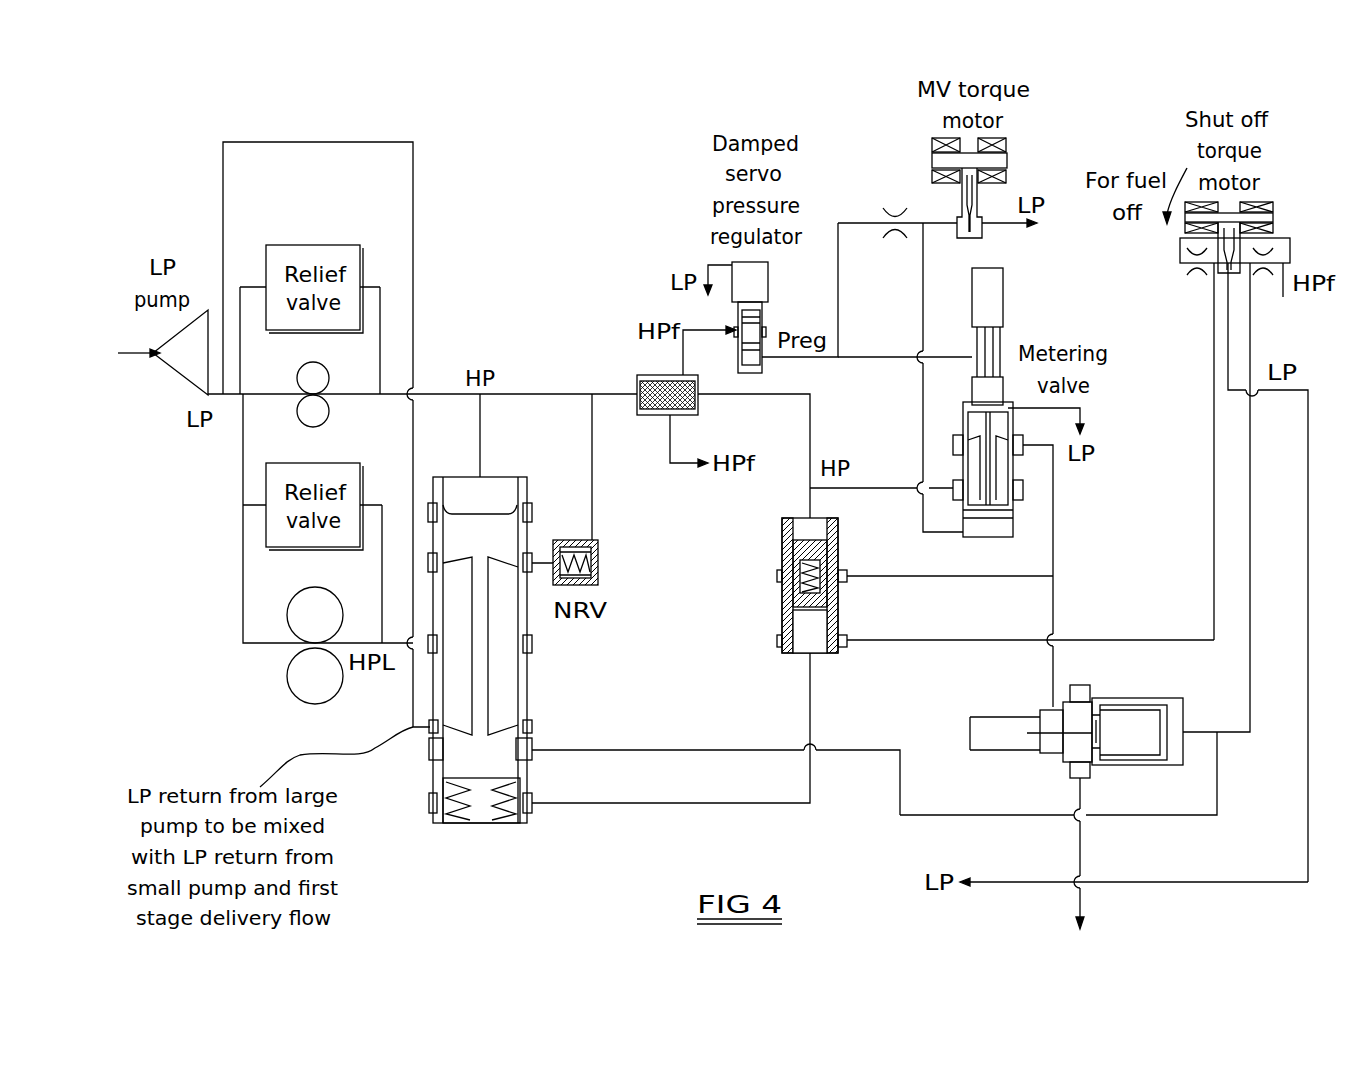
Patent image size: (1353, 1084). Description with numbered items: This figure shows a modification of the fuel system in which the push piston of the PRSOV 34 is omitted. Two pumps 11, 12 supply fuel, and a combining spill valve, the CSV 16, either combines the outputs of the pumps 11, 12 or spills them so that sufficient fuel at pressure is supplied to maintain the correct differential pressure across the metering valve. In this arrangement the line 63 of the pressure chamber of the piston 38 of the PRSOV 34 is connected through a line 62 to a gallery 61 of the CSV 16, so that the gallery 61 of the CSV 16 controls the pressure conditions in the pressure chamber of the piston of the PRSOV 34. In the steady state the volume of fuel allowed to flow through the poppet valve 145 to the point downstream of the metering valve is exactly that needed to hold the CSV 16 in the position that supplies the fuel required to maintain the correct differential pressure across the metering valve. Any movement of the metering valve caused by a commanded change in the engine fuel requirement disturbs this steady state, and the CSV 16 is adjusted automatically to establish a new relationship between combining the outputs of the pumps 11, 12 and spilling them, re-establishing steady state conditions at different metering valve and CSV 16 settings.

The pump 11 is at (318, 402).
The pump 12 is at (287, 675).
The combining spill valve (CSV) 16 is at (545, 688).
The gallery 61 is at (532, 748).
The line 62 is at (723, 750).
The line 63 is at (1250, 468).
The poppet valve 145 is at (760, 531).
The pressure raising and shut-off valve (PRSOV) 34 is at (1101, 729).
The piston 38 is at (1143, 760).